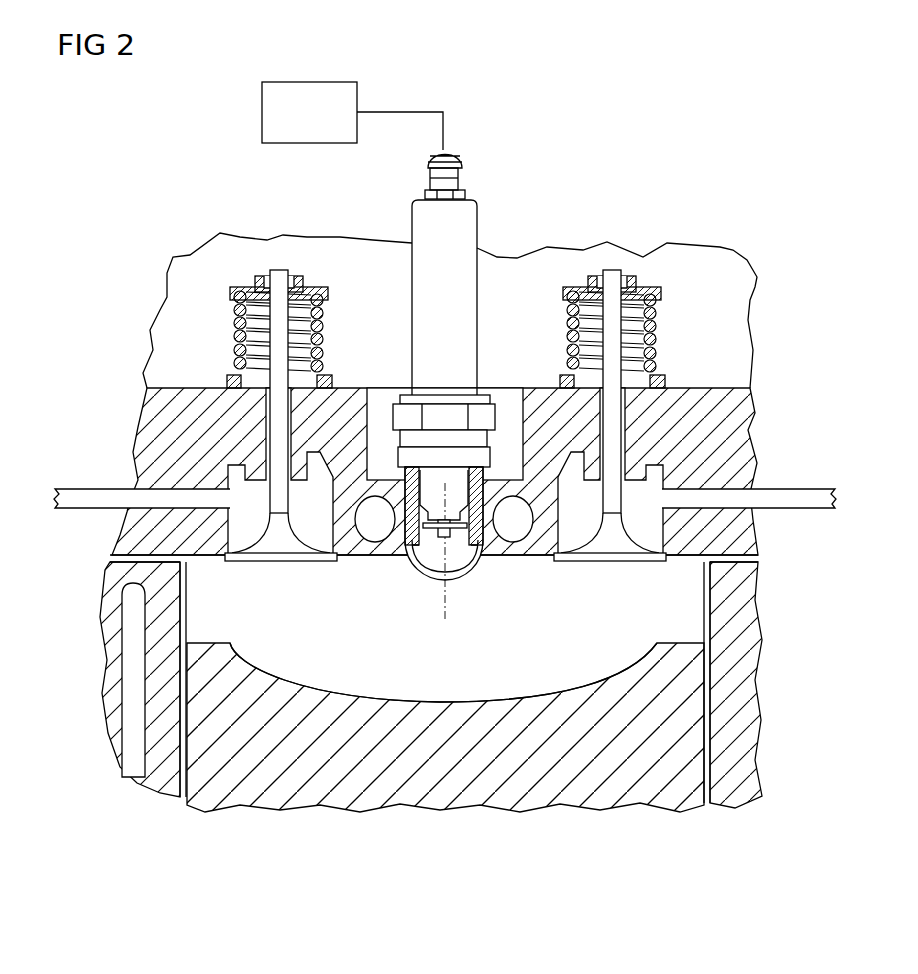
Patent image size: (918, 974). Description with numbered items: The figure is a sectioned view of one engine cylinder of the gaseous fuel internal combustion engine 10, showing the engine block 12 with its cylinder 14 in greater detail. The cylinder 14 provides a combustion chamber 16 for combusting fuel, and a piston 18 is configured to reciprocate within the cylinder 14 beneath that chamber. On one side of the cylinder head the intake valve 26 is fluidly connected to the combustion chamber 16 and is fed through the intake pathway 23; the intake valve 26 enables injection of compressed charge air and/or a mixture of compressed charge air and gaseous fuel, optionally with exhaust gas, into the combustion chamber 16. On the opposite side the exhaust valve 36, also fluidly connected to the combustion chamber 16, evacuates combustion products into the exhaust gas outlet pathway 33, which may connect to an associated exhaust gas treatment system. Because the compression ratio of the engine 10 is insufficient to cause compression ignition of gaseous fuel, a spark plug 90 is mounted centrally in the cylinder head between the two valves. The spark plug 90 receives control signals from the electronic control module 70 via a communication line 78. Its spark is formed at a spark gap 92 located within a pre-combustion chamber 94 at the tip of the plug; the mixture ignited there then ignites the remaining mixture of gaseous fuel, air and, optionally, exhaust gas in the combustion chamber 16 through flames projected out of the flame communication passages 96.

The gaseous fuel internal combustion engine 10 is at (682, 840).
The engine block 12 is at (748, 697).
The cylinder 14 is at (182, 622).
The combustion chamber 16 is at (458, 667).
The piston 18 is at (378, 698).
The intake pathway 23 is at (97, 495).
The intake valve 26 is at (290, 561).
The exhaust gas outlet pathway 33 is at (788, 497).
The exhaust valve 36 is at (620, 561).
The electronic control module 70 is at (262, 113).
The communication line 78 is at (400, 112).
The spark plug 90 is at (463, 290).
The spark gap 92 is at (435, 560).
The pre-combustion chamber 94 is at (450, 567).
The flame communication passages 96 is at (413, 567).